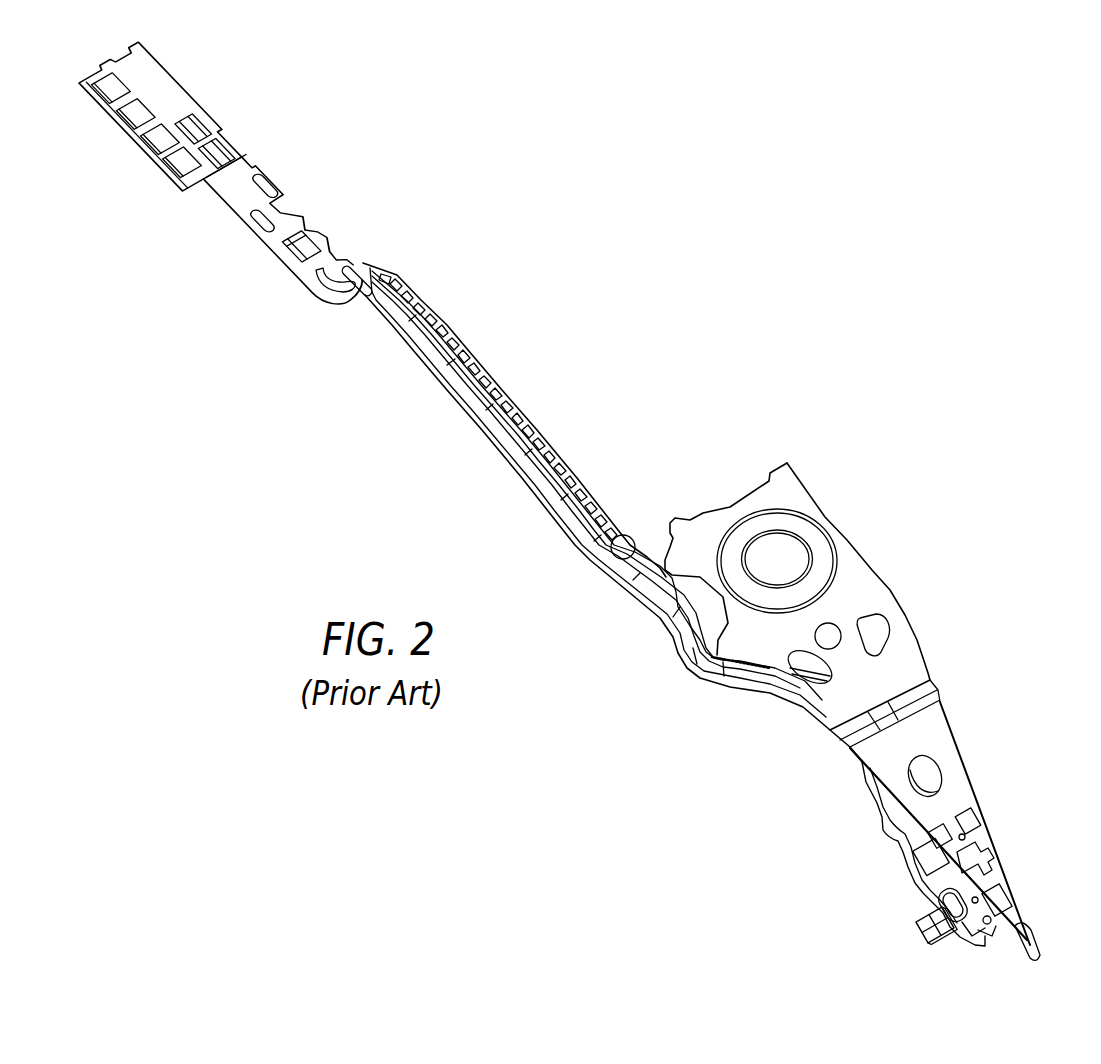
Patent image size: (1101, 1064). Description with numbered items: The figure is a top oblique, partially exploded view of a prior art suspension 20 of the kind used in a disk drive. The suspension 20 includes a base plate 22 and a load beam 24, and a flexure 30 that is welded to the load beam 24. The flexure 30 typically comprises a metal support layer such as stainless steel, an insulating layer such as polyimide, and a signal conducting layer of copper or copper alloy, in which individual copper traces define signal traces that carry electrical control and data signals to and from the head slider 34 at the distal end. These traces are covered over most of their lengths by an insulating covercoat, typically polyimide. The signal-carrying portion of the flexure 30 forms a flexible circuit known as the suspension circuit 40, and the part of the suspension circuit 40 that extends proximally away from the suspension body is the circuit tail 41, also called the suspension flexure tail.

The suspension 20 is at (988, 613).
The base plate 22 is at (813, 512).
The load beam 24 is at (970, 778).
The flexure 30 is at (914, 896).
The head slider 34 is at (921, 926).
The suspension circuit 40 is at (897, 864).
The circuit tail 41 is at (559, 454).